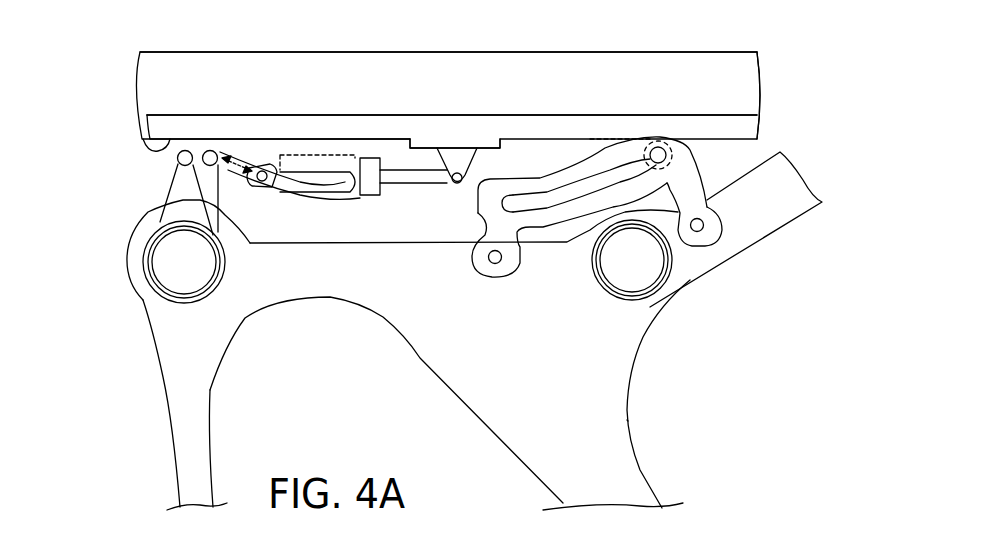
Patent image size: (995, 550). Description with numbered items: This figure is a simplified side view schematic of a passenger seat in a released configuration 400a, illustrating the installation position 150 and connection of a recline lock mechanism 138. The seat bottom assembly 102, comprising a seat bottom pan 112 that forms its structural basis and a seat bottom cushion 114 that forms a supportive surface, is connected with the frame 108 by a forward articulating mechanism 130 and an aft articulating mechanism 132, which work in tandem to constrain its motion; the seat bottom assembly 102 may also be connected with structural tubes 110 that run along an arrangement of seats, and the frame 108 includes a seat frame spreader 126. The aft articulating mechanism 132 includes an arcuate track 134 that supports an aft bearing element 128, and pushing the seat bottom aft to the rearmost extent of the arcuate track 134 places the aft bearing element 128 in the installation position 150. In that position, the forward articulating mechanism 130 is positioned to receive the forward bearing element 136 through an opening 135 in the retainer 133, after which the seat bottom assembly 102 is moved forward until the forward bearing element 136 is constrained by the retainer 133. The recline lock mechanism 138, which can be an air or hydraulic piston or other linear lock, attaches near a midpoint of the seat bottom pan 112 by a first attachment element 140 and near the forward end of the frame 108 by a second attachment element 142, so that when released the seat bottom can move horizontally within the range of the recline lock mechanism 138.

The seat bottom assembly 102 is at (587, 50).
The seat bottom cushion 114 is at (230, 52).
The seat bottom pan 112 is at (350, 115).
The first attachment element 140 is at (490, 138).
The opening 135 is at (156, 155).
The forward bearing element 136 is at (178, 163).
The second attachment element 142 is at (212, 163).
The retainer 133 is at (262, 192).
The forward articulating mechanism 130 is at (327, 167).
The recline lock assembly 138 is at (405, 200).
The aft bearing element 128 is at (657, 147).
The installation position 150 is at (667, 147).
The aft articulating mechanism 132 is at (722, 170).
The arcuate track 134 is at (543, 208).
The structural tubes 110 is at (163, 296).
The frame 108 is at (665, 367).
The seat frame spreader 126 is at (172, 418).
The released configuration 400a is at (748, 422).